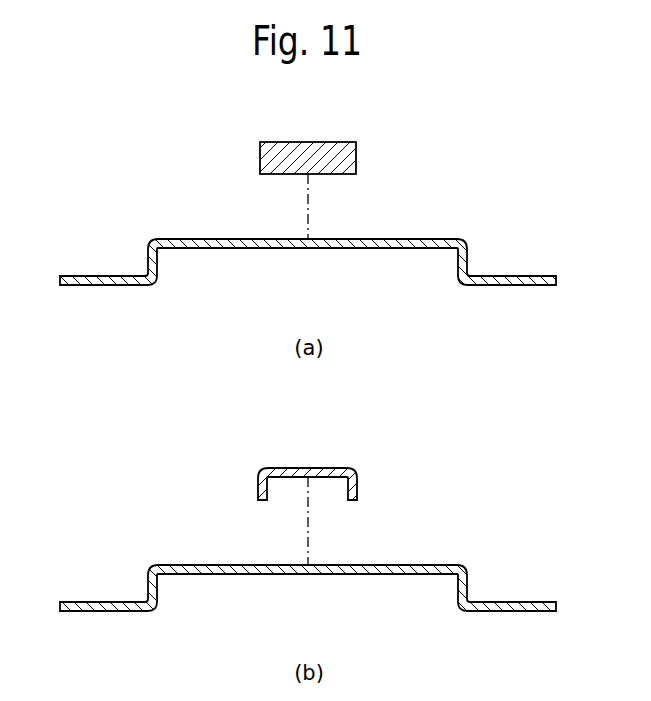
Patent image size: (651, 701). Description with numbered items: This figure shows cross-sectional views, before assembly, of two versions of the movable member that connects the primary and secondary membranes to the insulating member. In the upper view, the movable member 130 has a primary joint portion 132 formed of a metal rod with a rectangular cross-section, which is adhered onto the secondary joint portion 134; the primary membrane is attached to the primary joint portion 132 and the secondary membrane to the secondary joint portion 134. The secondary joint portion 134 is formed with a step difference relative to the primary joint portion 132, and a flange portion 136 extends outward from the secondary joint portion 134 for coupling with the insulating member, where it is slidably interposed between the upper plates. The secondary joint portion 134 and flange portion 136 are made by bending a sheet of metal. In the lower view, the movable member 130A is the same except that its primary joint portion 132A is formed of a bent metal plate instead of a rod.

The movable member 130 is at (127, 212).
The movable member 130A is at (126, 536).
The primary joint portion 132 is at (306, 142).
The primary joint portion 132A is at (307, 468).
The secondary joint portion 134 is at (421, 239).
The flange portion 136 is at (508, 276).